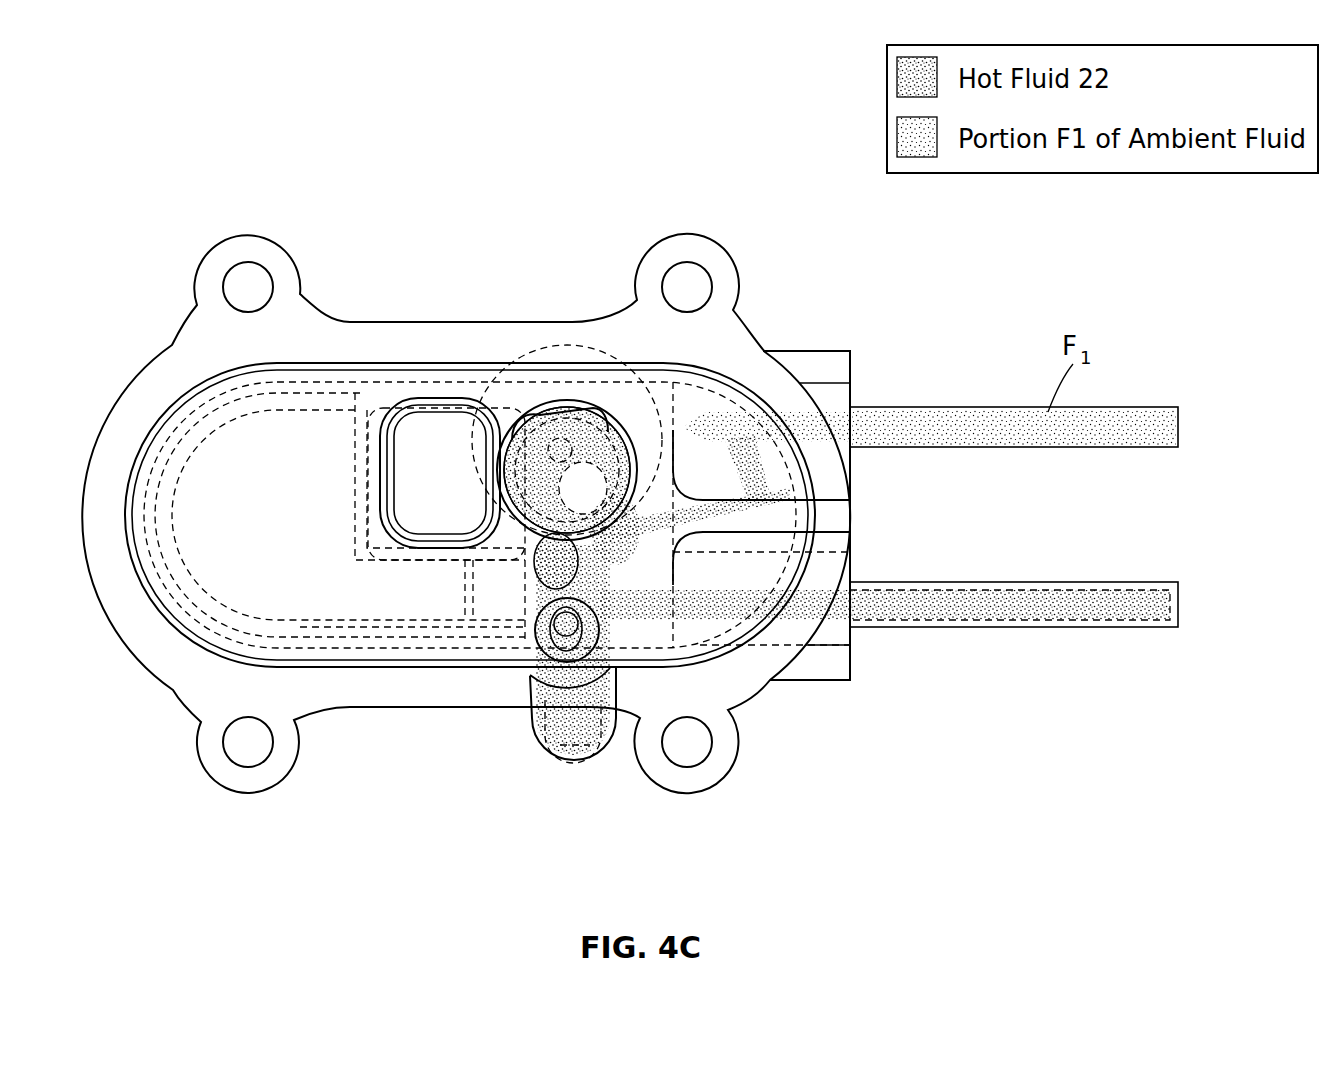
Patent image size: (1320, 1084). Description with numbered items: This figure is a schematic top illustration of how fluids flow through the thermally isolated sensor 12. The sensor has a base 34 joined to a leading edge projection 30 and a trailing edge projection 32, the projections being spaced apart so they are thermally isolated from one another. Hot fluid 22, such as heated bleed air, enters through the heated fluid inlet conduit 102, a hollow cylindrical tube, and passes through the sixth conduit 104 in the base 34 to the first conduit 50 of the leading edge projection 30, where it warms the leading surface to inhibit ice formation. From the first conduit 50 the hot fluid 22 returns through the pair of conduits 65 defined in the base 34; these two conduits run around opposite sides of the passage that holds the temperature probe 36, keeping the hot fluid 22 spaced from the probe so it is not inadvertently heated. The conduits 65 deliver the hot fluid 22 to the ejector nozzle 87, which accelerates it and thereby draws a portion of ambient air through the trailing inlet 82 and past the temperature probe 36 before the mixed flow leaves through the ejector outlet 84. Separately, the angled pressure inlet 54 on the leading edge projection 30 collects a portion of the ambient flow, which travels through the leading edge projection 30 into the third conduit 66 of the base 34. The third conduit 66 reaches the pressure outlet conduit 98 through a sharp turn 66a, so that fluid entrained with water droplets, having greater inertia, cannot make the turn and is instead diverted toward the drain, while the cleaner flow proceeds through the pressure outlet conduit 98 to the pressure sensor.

The thermally isolated sensor 12 is at (846, 231).
The base 34 is at (394, 231).
The pair of conduits 65 is at (470, 528).
The ejector outlet 84 is at (540, 553).
The ejector nozzle 87 is at (560, 460).
The turn 66a is at (705, 400).
The third conduit 66 is at (620, 535).
The pressure outlet conduit 98 is at (885, 407).
The heated fluid inlet conduit 102 is at (885, 628).
The hot fluid 22 is at (1047, 605).
The sixth conduit 104 is at (700, 660).
The trailing edge projection 32 is at (512, 631).
The temperature probe 36 is at (560, 616).
The trailing inlet 82 is at (552, 645).
The first conduit 50 is at (549, 757).
The leading edge projection 30 is at (567, 765).
The pressure inlet 54 is at (596, 760).